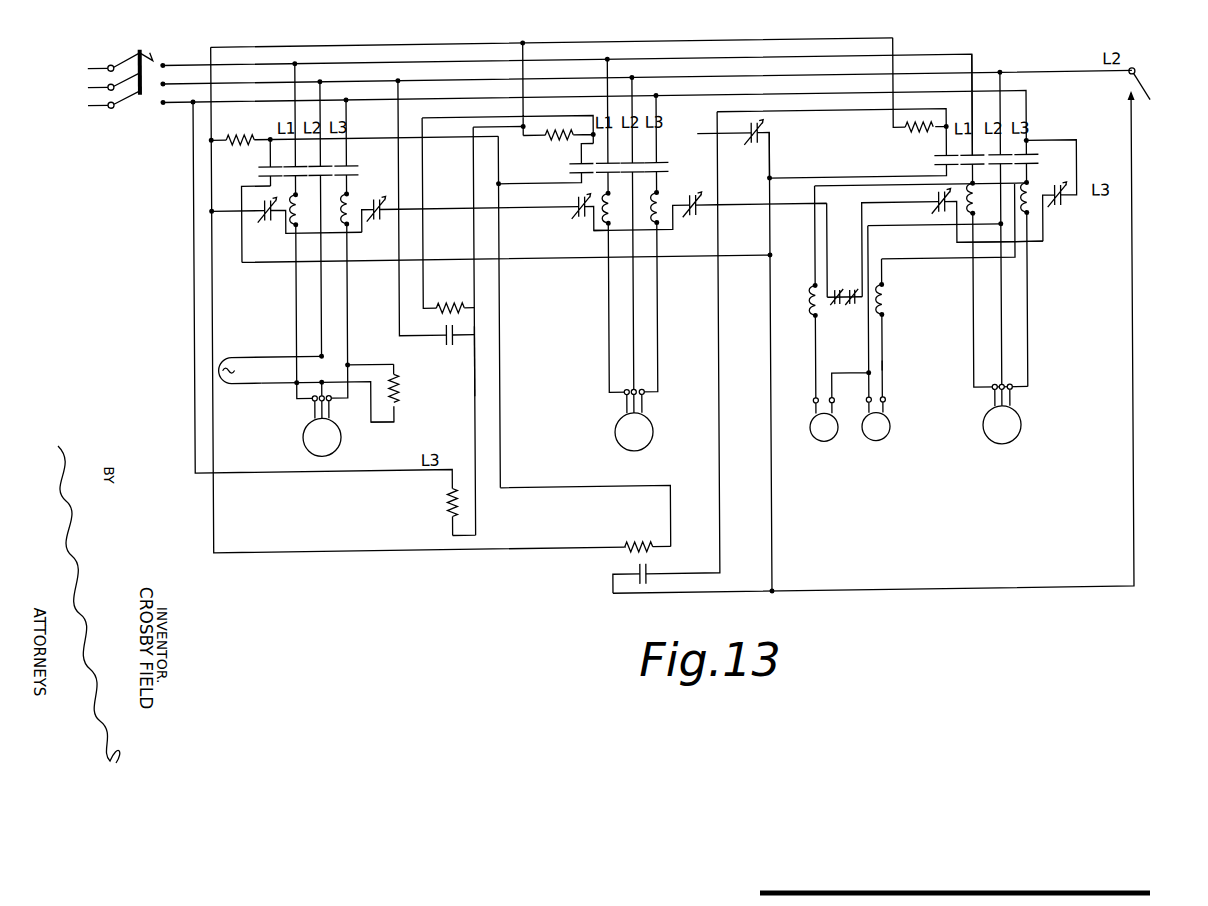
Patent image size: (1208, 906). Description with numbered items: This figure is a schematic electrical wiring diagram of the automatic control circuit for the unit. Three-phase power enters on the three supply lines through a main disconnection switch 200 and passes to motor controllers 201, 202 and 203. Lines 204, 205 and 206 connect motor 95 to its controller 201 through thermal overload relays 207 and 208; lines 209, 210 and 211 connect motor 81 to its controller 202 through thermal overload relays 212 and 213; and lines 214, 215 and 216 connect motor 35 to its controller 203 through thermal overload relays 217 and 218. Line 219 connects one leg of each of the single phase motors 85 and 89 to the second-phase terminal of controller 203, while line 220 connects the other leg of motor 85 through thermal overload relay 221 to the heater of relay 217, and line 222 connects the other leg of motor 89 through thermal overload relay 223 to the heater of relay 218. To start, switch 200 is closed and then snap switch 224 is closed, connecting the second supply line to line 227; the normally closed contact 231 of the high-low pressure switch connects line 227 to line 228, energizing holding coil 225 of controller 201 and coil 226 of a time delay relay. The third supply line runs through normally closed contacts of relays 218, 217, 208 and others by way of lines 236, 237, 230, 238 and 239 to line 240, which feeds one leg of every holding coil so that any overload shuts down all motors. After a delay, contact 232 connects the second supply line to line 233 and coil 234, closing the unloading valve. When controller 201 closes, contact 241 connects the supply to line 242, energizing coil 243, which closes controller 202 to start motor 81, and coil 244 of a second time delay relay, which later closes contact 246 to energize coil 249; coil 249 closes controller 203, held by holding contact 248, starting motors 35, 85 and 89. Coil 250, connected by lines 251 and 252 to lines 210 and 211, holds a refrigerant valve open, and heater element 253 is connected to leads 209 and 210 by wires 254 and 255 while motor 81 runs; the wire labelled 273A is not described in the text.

The main disconnection switch 200 is at (105, 93).
The snap switch 224 is at (1151, 103).
The line 227 is at (248, 266).
The line 240 is at (436, 47).
The coil 243 is at (237, 135).
The motor controller 202 is at (295, 40).
The motor controller 201 is at (595, 38).
The motor controller 203 is at (949, 38).
The thermal overload relay 212 is at (287, 220).
The line 239 is at (289, 243).
The thermal overload relay 213 is at (378, 224).
The line 209 is at (295, 292).
The line 210 is at (320, 320).
The line 211 is at (346, 315).
The line 251 is at (372, 366).
The wire 254 is at (261, 357).
The heater element 253 is at (235, 372).
The wire 255 is at (262, 388).
The coil 250 is at (394, 392).
The line 252 is at (394, 424).
The refrigerant recirculating pump motor 81 is at (302, 443).
The coil 234 is at (446, 500).
The line 228 is at (426, 291).
The coil of time delay relay 226 is at (465, 314).
The normally open contact 232 is at (446, 342).
The line 233 is at (473, 375).
The holding coil 225 is at (546, 142).
The normally open contact 241 is at (576, 172).
The line 238 is at (548, 213).
The thermal overload relay 207 is at (586, 225).
The thermal overload relay 208 is at (688, 222).
The line 230 is at (672, 238).
The normally closed contact 231 is at (764, 136).
The coil 249 is at (905, 141).
The holding contact 248 is at (934, 162).
The conductor 273A is at (827, 234).
The line 237 is at (890, 195).
The thermal overload relay 217 is at (938, 216).
The thermal overload relay 218 is at (1060, 218).
The line 236 is at (1044, 258).
The thermal overload relay 221 is at (814, 296).
The line 220 is at (814, 352).
The thermal overload relay 223 is at (884, 310).
The line 219 is at (866, 355).
The line 222 is at (884, 376).
The motor 85 is at (816, 446).
The motor 89 is at (870, 447).
The line 214 is at (972, 327).
The line 215 is at (1000, 338).
The line 216 is at (1027, 345).
The motor 35 is at (992, 448).
The line 204 is at (607, 362).
The line 205 is at (632, 335).
The line 206 is at (657, 362).
The motor 95 is at (627, 449).
The line 242 is at (667, 490).
The coil of time delay relay 244 is at (625, 550).
The contact 246 is at (645, 577).